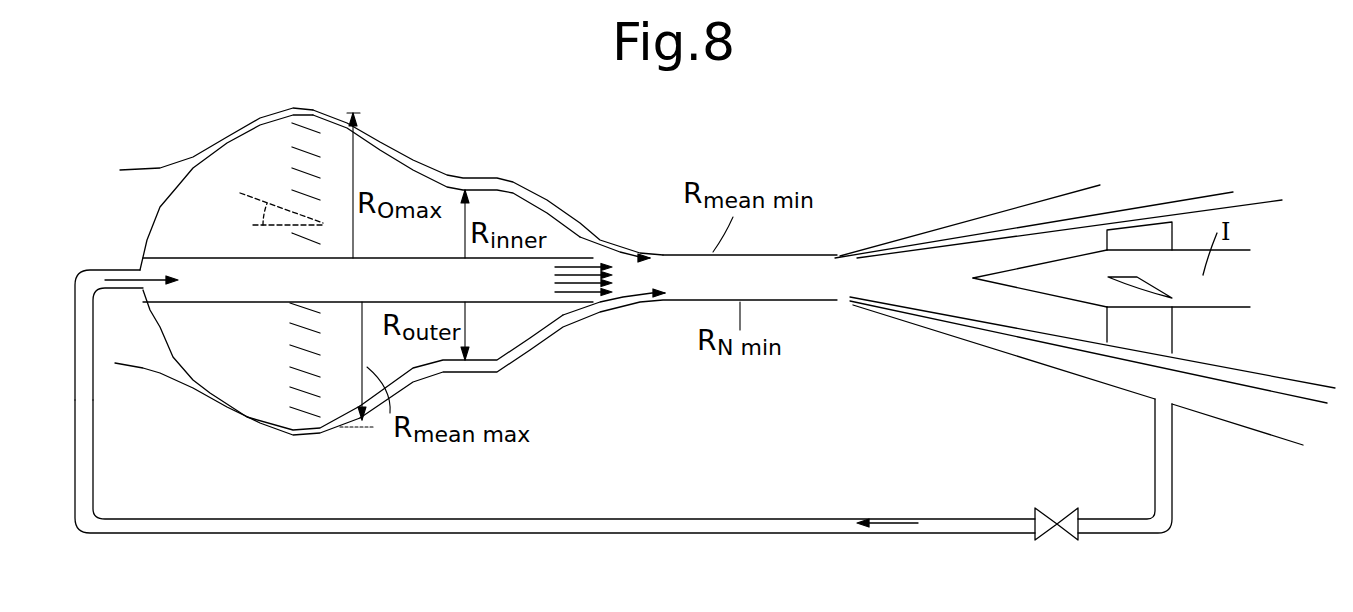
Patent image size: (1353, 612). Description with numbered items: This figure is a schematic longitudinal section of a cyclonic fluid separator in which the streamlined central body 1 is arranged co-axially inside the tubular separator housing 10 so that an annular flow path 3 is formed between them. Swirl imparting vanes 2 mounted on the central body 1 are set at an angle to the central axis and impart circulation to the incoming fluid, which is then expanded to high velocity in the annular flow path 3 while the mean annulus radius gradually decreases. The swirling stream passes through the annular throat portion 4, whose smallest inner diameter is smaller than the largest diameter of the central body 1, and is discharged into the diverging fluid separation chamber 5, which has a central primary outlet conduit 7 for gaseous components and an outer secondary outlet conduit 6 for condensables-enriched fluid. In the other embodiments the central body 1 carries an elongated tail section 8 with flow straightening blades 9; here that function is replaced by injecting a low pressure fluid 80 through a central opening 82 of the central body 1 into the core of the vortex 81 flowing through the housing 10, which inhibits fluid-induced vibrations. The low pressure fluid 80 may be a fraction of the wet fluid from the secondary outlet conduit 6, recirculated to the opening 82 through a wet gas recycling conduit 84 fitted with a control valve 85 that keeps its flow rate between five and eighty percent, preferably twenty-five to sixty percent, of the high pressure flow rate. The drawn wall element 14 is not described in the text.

The central body 1 is at (210, 187).
The swirl imparting vanes 2 is at (293, 303).
The annular flow path 3 is at (403, 152).
The annular throat portion 4 is at (662, 257).
The fluid separation chamber 5 is at (848, 300).
The secondary outlet conduit 6 is at (1023, 222).
The primary outlet conduit 7 is at (1085, 322).
The elongated tail section 8 is at (902, 262).
The flow straightening blades 9 is at (1155, 233).
The separator housing 10 is at (602, 230).
The nozzle wall 14 is at (945, 243).
The low pressure fluid 80 is at (600, 297).
The vortex 81 is at (617, 307).
The central opening 82 is at (190, 270).
The wet gas recycling conduit 84 is at (953, 517).
The control valve 85 is at (1068, 507).